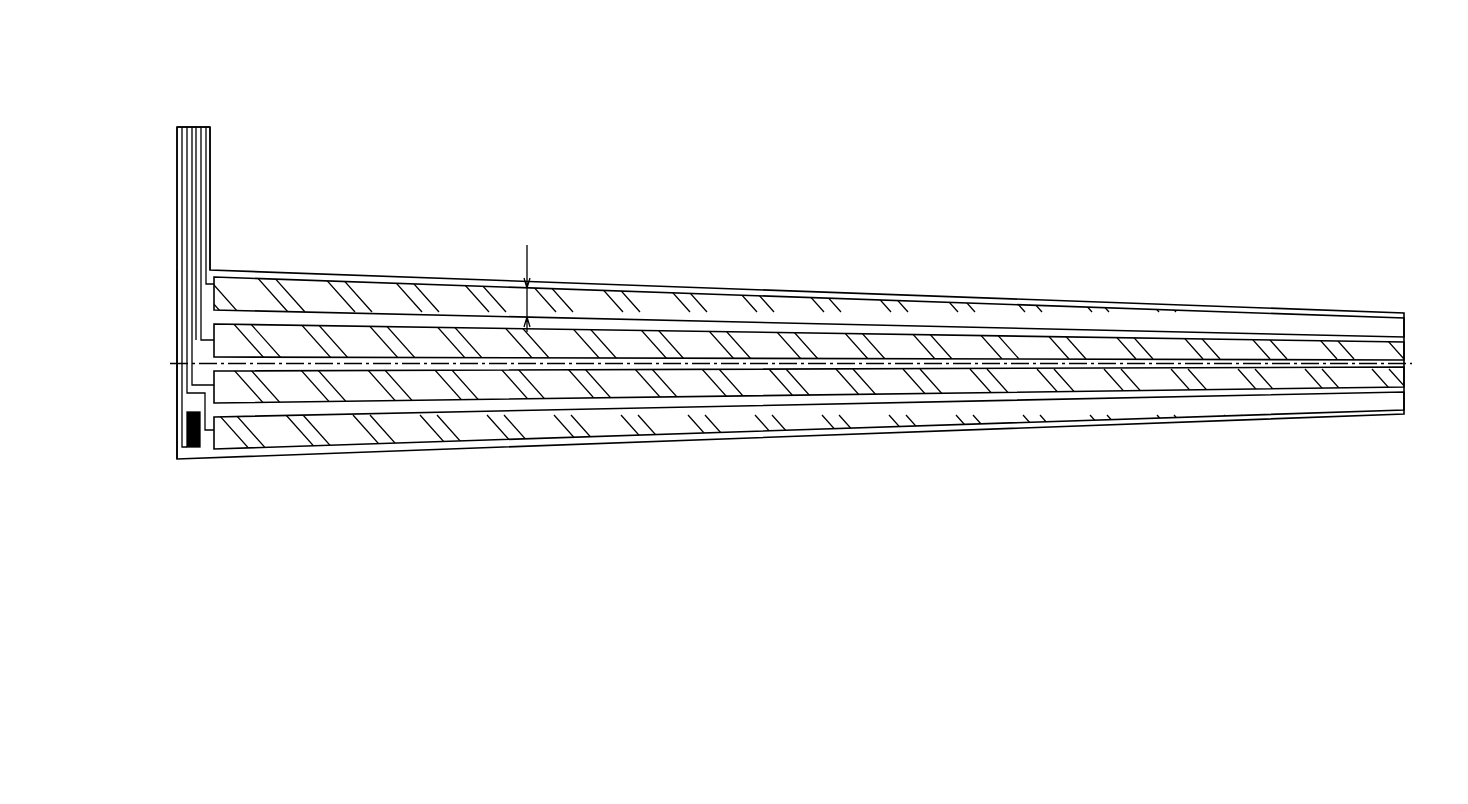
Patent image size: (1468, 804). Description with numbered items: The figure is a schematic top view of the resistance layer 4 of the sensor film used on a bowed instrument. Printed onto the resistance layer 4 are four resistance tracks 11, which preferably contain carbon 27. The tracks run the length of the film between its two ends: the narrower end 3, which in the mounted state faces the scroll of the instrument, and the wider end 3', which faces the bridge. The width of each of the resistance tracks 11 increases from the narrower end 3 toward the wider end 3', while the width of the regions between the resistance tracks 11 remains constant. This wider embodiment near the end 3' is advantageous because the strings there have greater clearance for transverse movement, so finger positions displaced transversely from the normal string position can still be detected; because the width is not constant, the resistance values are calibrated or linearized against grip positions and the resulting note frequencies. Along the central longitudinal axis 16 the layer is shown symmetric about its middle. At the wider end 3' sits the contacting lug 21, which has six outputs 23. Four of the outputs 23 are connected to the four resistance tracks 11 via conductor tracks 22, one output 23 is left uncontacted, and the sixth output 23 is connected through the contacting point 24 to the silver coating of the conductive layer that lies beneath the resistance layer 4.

The narrower end 3 is at (790, 293).
The wider end 3' is at (151, 341).
The resistance layer 4 is at (1245, 194).
The resistance tracks 11 is at (418, 370).
The carbon 27 is at (810, 363).
The central longitudinal axis 16 is at (728, 364).
The contacting lug 21 is at (210, 148).
The conductor tracks 22 is at (187, 393).
The outputs 23 is at (201, 181).
The contacting point 24 is at (200, 442).